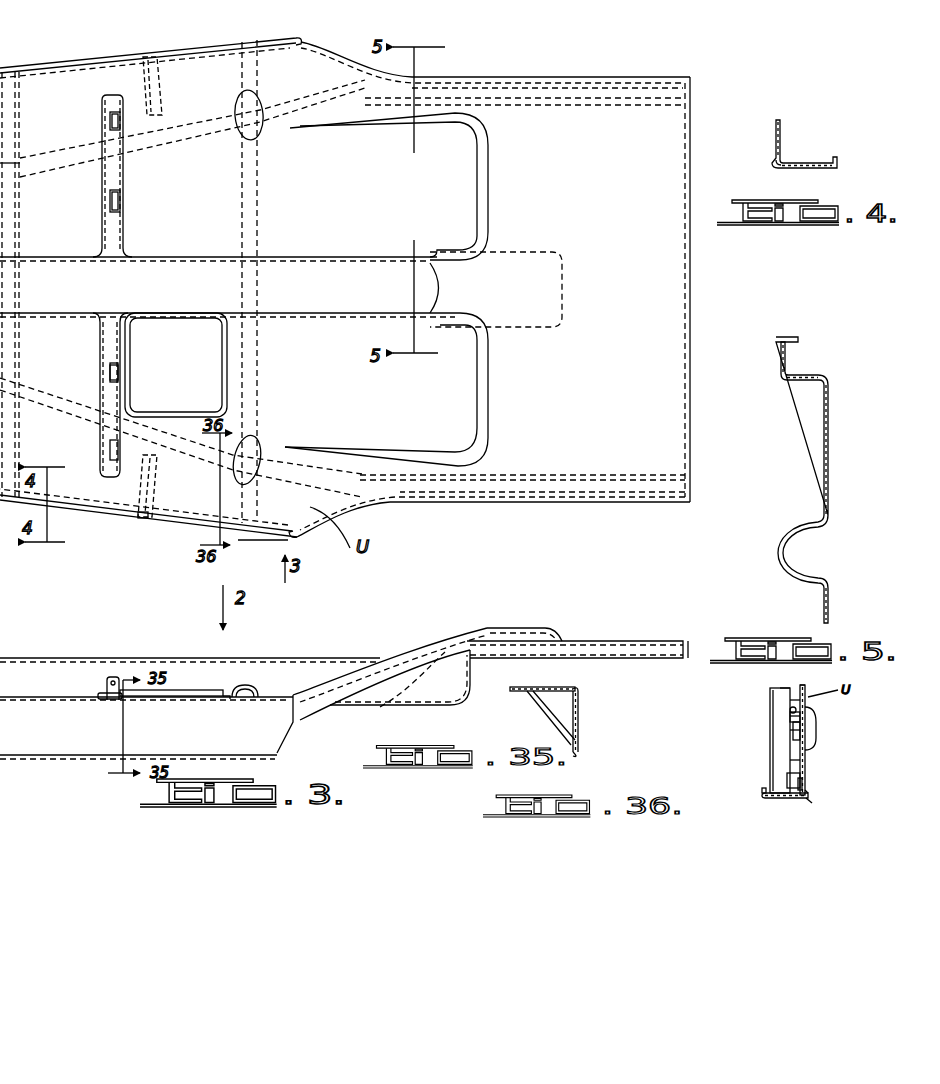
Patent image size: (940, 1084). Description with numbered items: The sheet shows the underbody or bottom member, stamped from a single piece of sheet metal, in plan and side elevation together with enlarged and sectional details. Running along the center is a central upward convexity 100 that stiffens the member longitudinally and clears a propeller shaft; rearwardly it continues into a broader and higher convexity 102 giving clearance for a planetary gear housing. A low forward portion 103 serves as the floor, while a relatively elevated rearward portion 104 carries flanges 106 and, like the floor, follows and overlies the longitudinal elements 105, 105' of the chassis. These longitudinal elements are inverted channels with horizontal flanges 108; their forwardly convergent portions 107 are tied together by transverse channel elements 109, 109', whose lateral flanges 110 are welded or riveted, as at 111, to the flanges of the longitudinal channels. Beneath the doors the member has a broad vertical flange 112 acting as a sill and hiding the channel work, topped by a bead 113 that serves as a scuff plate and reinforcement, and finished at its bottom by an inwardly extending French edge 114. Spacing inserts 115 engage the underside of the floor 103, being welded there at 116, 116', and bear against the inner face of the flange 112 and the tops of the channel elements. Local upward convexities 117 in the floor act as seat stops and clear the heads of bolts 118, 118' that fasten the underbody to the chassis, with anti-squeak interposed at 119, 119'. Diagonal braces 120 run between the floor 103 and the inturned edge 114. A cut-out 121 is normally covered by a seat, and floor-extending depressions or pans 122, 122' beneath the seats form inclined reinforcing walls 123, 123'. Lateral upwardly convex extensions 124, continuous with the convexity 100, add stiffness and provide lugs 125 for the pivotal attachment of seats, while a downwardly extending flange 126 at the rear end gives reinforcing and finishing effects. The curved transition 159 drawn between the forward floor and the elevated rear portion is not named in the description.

In FIG. 2, the central upward convexity 100 is at (163, 268).
In FIG. 5, the central upward convexity 100 is at (788, 575).
In FIG. 3, the central upward convexity 100 is at (270, 656).
In FIG. 3, the broader and higher convexity 102 is at (518, 632).
In FIG. 4, the low forward portion 103 is at (776, 125).
In FIG. 3, the low forward portion 103 is at (0, 657).
In FIG. 35, the low forward portion 103 is at (573, 688).
In FIG. 36, the low forward portion 103 is at (805, 752).
In FIG. 2, the relatively elevated rearward portion 104 is at (580, 461).
In FIG. 3, the relatively elevated rearward portion 104 is at (610, 637).
In FIG. 2, the longitudinal element 105 is at (525, 320).
In FIG. 36, the longitudinal element 105 is at (753, 721).
In FIG. 2, the longitudinal element 105' is at (345, 64).
In FIG. 2, the flange 106 is at (523, 503).
In FIG. 3, the flange 106 is at (583, 652).
In FIG. 36, the forwardly convergent portion 107 is at (790, 700).
In FIG. 36, the horizontal flange 108 is at (790, 710).
In FIG. 2, the transverse channel element 109 is at (279, 281).
In FIG. 36, the transverse channel element 109 is at (742, 740).
In FIG. 2, the transverse channel element 109' is at (42, 284).
In FIG. 36, the lateral flange 110 is at (780, 688).
In FIG. 36, the weld or rivet 111 is at (795, 730).
In FIG. 2, the vertical flange 112 is at (230, 533).
In FIG. 4, the vertical flange 112 is at (808, 167).
In FIG. 3, the vertical flange 112 is at (43, 738).
In FIG. 35, the vertical flange 112 is at (580, 720).
In FIG. 36, the vertical flange 112 is at (770, 797).
In FIG. 2, the bead 113 is at (105, 513).
In FIG. 4, the bead 113 is at (774, 163).
In FIG. 3, the bead 113 is at (14, 690).
In FIG. 35, the bead 113 is at (578, 688).
In FIG. 36, the bead 113 is at (806, 790).
In FIG. 35, the French edge 114 is at (578, 755).
In FIG. 36, the French edge 114 is at (765, 794).
In FIG. 2, the spacing insert 115 is at (266, 495).
In FIG. 36, the spacing insert 115 is at (790, 760).
In FIG. 36, the weld 116 is at (823, 731).
In FIG. 36, the weld 116' is at (827, 773).
In FIG. 2, the local upward convexity 117 is at (247, 130).
In FIG. 3, the local upward convexity 117 is at (250, 688).
In FIG. 36, the local upward convexity 117 is at (816, 720).
In FIG. 36, the bolt 118 is at (766, 774).
In FIG. 36, the bolt 118' is at (770, 724).
In FIG. 36, the anti-squeak 119 is at (790, 679).
In FIG. 36, the anti-squeak 119' is at (829, 805).
In FIG. 2, the diagonal brace 120 is at (155, 484).
In FIG. 35, the diagonal brace 120 is at (545, 718).
In FIG. 2, the cut-out 121 is at (222, 374).
In FIG. 2, the floor-extending depression or pan 122 is at (419, 388).
In FIG. 2, the floor-extending depression or pan 122' is at (422, 189).
In FIG. 5, the floor-extending depression or pan 122' is at (792, 426).
In FIG. 2, the inclined reinforcing wall 123 is at (421, 389).
In FIG. 2, the inclined reinforcing wall 123' is at (425, 186).
In FIG. 2, the lateral upwardly convex extension 124 is at (117, 220).
In FIG. 3, the lateral upwardly convex extension 124 is at (100, 693).
In FIG. 2, the lug 125 is at (112, 362).
In FIG. 3, the lug 125 is at (111, 677).
In FIG. 2, the downwardly extending flange 126 is at (700, 312).
In FIG. 2, the curved transition 159 is at (370, 503).
In FIG. 3, the curved transition 159 is at (412, 647).